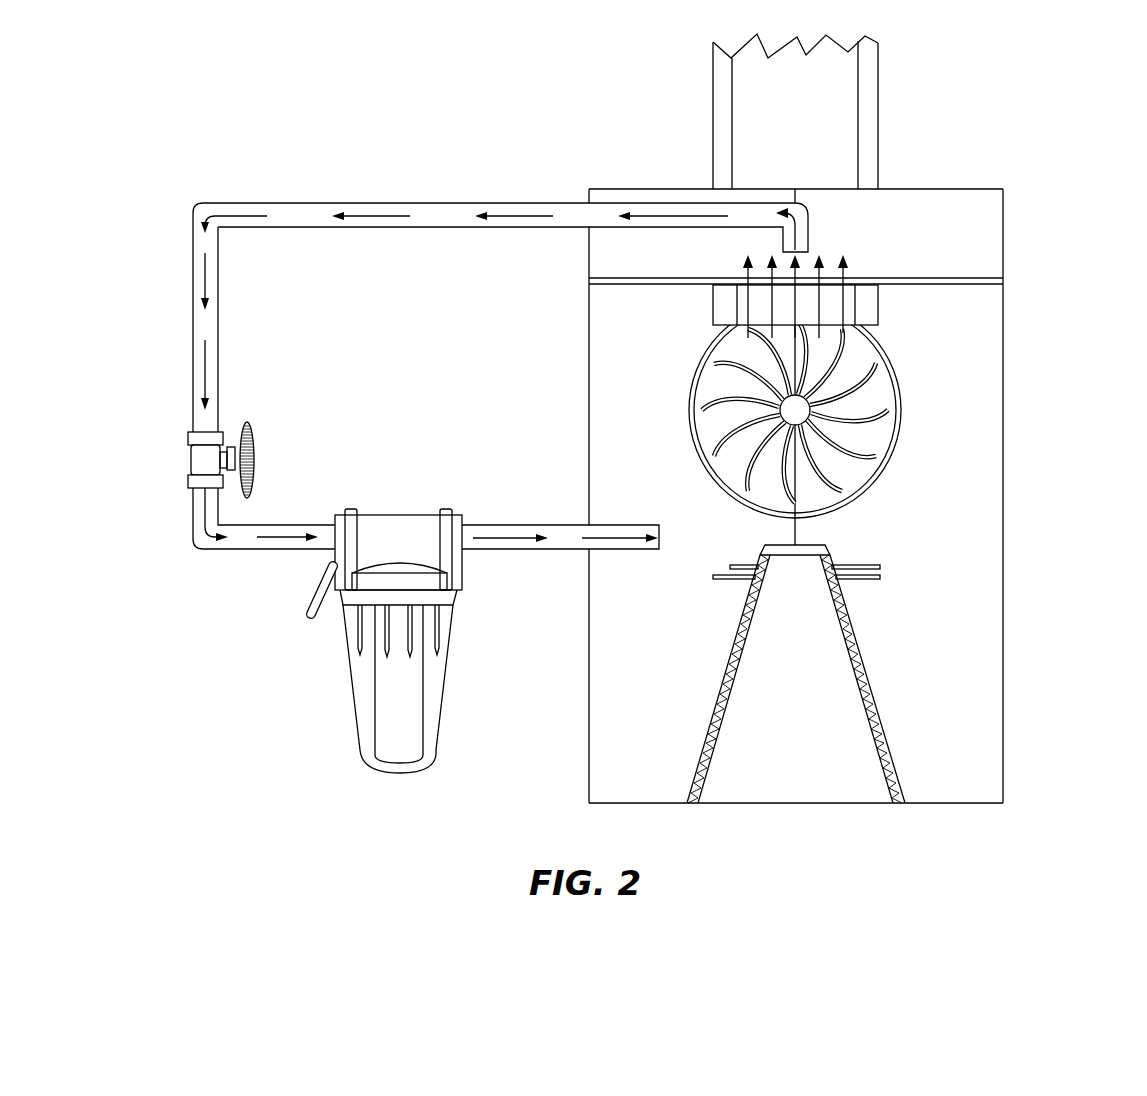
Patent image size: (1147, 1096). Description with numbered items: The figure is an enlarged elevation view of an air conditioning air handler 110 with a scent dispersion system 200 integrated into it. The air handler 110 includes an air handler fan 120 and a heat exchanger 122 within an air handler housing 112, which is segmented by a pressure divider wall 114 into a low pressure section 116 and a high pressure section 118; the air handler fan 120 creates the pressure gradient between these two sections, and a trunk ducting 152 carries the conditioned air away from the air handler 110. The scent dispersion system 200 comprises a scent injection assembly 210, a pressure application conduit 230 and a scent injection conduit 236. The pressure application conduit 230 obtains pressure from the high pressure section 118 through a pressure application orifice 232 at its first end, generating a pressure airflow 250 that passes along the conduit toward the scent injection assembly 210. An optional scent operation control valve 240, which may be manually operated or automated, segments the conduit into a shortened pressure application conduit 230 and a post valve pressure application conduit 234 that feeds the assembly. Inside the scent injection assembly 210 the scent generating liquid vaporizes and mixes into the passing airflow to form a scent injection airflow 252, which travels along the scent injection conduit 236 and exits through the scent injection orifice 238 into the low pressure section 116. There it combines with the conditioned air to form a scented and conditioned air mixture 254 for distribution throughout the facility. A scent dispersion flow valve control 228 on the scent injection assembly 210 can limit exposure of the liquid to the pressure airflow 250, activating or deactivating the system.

The scent dispersion system 200 is at (157, 180).
The air handler 110 is at (1062, 212).
The air handler housing 112 is at (1003, 568).
The pressure divider wall 114 is at (1003, 283).
The low pressure section 116 is at (945, 648).
The high pressure section 118 is at (934, 253).
The air handler fan 120 is at (900, 418).
The heat exchanger 122 is at (883, 733).
The trunk ducting 152 is at (878, 110).
The scent injection assembly 210 is at (355, 707).
The scent dispersion flow valve control 228 is at (313, 600).
The pressure application conduit 230 is at (193, 333).
The pressure application orifice 232 is at (797, 254).
The post valve pressure application conduit 234 is at (243, 549).
The scent injection conduit 236 is at (487, 549).
The scent injection orifice 238 is at (661, 545).
The scent operation control valve 240 is at (191, 460).
The pressure airflow 250 is at (377, 203).
The scent injection airflow 252 is at (510, 538).
The scented and conditioned air mixture 254 is at (857, 307).